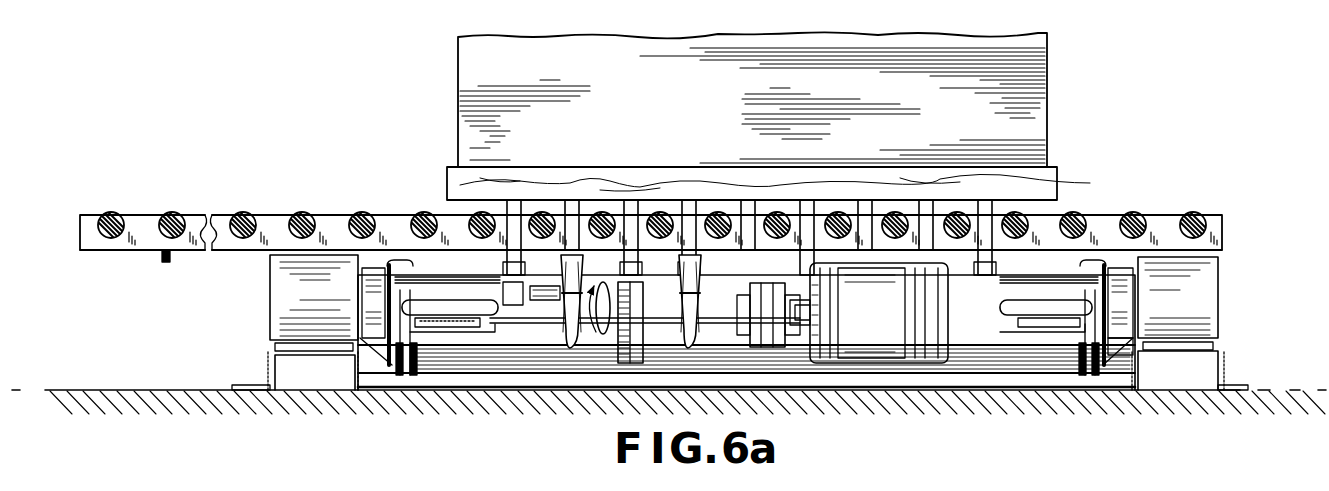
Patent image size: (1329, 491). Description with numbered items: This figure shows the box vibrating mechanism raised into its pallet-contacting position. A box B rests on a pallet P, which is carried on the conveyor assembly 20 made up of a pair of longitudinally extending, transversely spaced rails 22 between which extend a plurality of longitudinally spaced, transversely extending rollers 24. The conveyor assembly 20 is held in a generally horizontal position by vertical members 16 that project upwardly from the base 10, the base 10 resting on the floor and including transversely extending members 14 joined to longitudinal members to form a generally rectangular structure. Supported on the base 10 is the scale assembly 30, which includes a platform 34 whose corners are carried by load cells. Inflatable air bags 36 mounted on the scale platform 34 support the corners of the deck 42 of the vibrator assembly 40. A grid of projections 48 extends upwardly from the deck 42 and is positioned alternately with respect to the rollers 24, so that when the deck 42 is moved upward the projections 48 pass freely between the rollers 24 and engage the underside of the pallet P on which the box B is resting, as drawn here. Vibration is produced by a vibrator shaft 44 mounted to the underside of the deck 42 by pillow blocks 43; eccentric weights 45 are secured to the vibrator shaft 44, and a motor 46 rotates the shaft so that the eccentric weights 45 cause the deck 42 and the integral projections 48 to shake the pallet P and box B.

The box B is at (1055, 145).
The pallet P is at (439, 183).
The base 10 is at (843, 370).
The transversely extending members 14 is at (310, 372).
The vertical members 16 is at (290, 298).
The conveyor assembly 20 is at (700, 219).
The rails 22 is at (1200, 243).
The rollers 24 is at (1134, 212).
The scale assembly 30 is at (534, 365).
The platform 34 is at (1017, 352).
The inflatable air bags 36 is at (490, 305).
The vibrator assembly 40 is at (658, 286).
The deck 42 is at (538, 298).
The pillow blocks 43 is at (572, 347).
The vibrator shaft 44 is at (717, 305).
The eccentric weights 45 is at (603, 281).
The motor 46 is at (877, 352).
The projections 48 is at (505, 215).